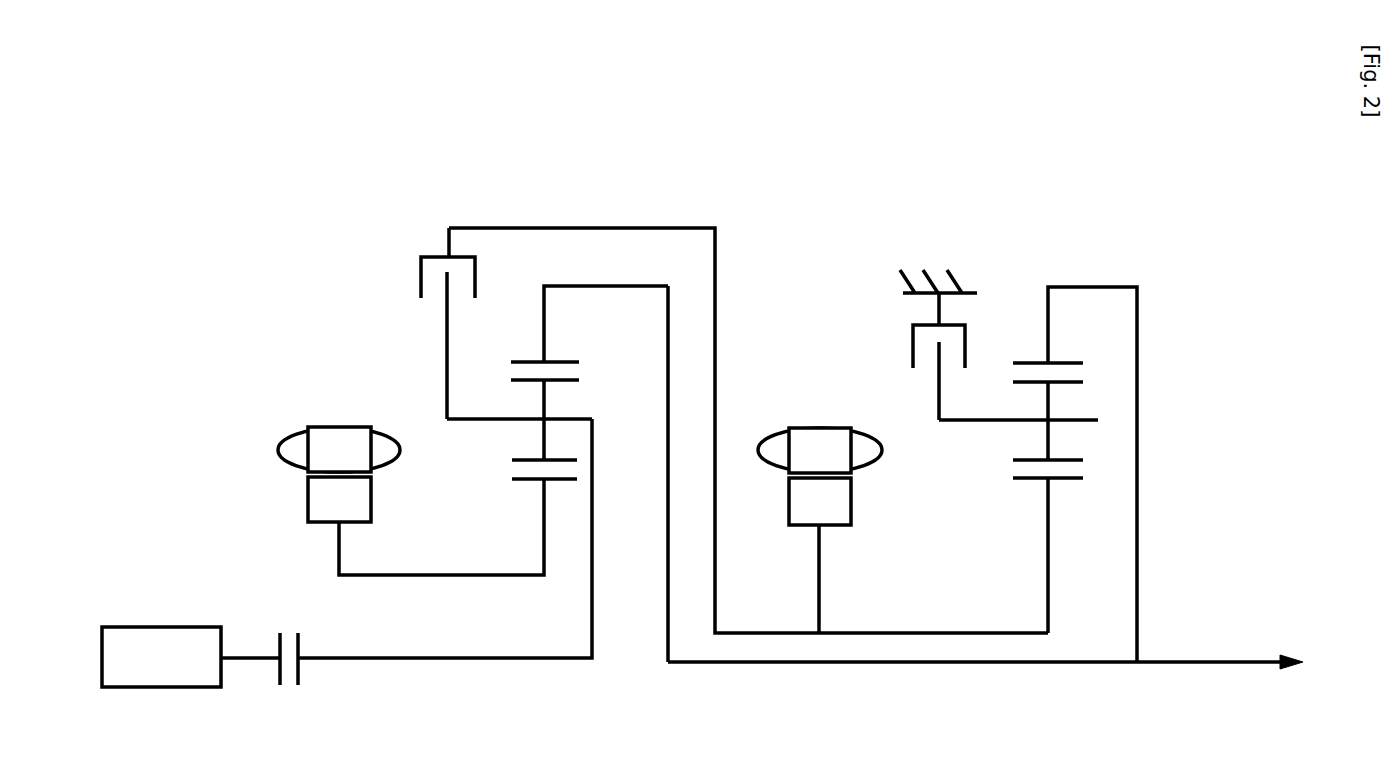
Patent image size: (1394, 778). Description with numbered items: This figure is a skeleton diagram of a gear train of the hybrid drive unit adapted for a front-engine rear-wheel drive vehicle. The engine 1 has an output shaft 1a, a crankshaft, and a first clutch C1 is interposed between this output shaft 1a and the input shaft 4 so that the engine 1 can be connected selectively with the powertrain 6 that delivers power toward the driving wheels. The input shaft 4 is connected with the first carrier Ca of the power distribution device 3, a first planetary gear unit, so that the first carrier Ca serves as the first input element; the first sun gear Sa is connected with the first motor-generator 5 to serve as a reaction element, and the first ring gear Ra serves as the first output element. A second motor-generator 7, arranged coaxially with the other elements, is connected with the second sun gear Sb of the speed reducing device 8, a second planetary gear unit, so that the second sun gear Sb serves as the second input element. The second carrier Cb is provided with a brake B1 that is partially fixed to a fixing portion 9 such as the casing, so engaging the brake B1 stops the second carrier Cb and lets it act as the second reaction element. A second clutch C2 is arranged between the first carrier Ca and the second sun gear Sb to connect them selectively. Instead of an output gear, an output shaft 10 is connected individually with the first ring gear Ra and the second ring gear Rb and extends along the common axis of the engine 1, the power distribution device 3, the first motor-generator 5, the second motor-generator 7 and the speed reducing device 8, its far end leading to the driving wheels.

The engine 1 is at (168, 627).
The output shaft (crankshaft) 1a is at (248, 662).
The first clutch C1 is at (290, 693).
The input shaft 4 is at (465, 661).
The first motor-generator 5 is at (290, 422).
The power distribution device 3 is at (482, 366).
The second clutch C2 is at (403, 265).
The first carrier Ca is at (468, 421).
The first ring gear Ra is at (575, 362).
The first sun gear Sa is at (515, 470).
The powertrain 6 is at (682, 694).
The second motor-generator 7 is at (801, 412).
The fixing portion 9 is at (975, 292).
The brake B1 is at (905, 342).
The speed reducing device 8 is at (1085, 474).
The second carrier Cb is at (965, 421).
The second ring gear Rb is at (1074, 363).
The second sun gear Sb is at (1018, 476).
The output shaft 10 is at (960, 666).